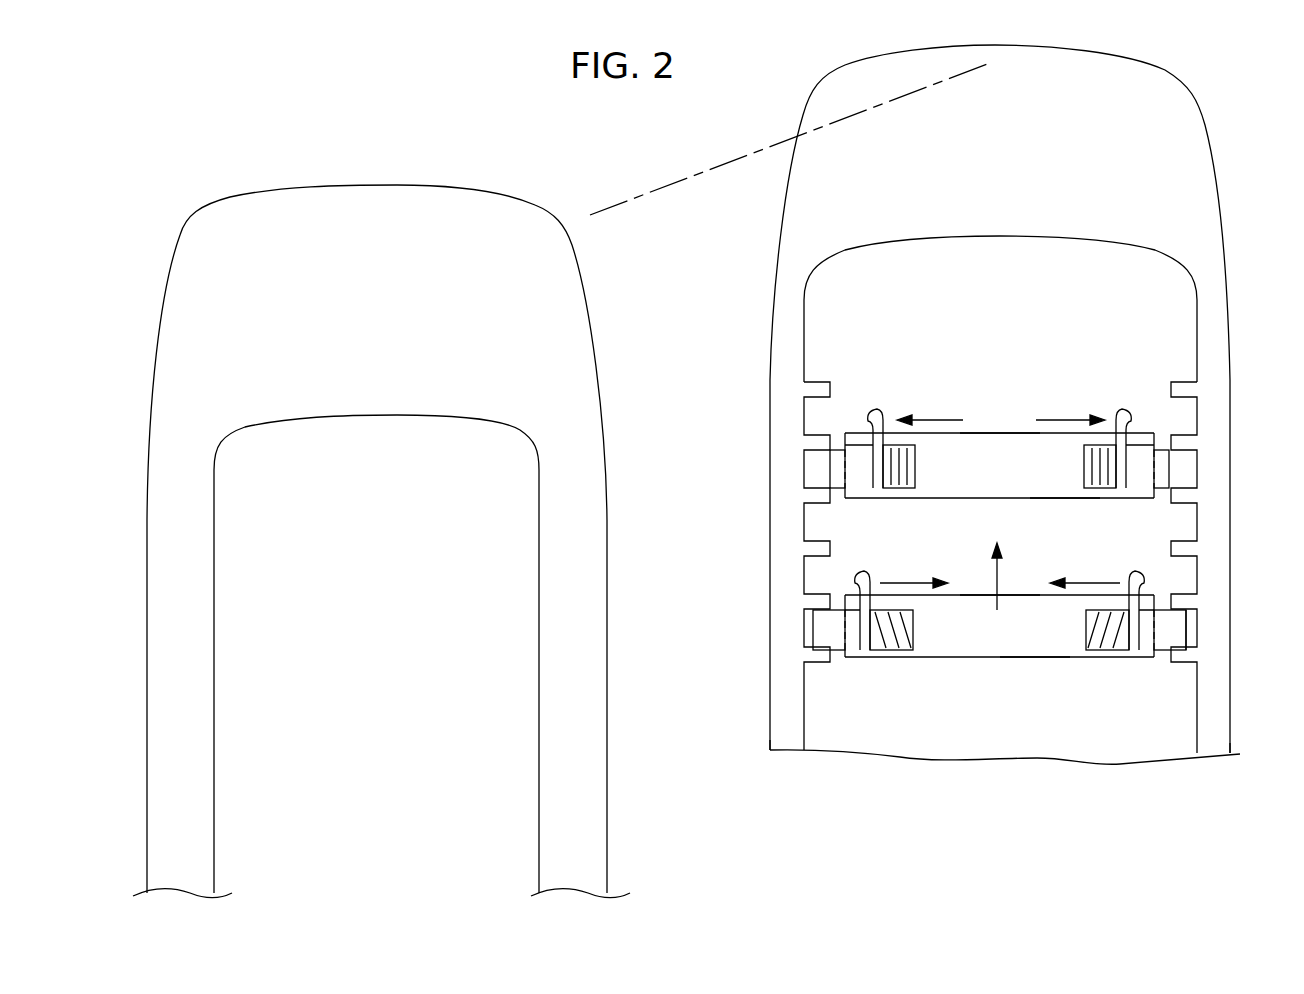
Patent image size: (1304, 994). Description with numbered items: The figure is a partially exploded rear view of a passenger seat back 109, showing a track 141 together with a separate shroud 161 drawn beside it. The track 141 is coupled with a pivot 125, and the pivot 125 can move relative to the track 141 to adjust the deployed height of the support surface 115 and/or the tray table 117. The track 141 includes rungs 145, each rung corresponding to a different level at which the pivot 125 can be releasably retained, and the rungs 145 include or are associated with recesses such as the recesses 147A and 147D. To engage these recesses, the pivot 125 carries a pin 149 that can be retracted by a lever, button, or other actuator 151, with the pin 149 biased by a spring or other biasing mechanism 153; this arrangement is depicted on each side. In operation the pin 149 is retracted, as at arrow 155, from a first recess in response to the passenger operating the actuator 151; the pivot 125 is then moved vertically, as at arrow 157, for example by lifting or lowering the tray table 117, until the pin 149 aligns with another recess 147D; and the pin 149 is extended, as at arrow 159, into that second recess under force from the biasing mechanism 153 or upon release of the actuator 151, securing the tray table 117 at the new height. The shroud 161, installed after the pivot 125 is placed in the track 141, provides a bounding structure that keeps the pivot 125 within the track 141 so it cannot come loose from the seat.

The seat back 109 is at (1227, 220).
The support surface 115 is at (1018, 432).
The tray table 117 is at (1070, 498).
The pivot 125 is at (1188, 628).
The track 141 is at (1203, 772).
The rungs 145 is at (708, 380).
The recess 147A is at (838, 655).
The recess 147D is at (802, 450).
The pin 149 is at (836, 472).
The actuator 151 is at (862, 580).
The biasing mechanism 153 is at (902, 482).
The arrow 155 is at (898, 584).
The arrow 157 is at (997, 598).
The arrow 159 is at (936, 420).
The shroud 161 is at (178, 318).